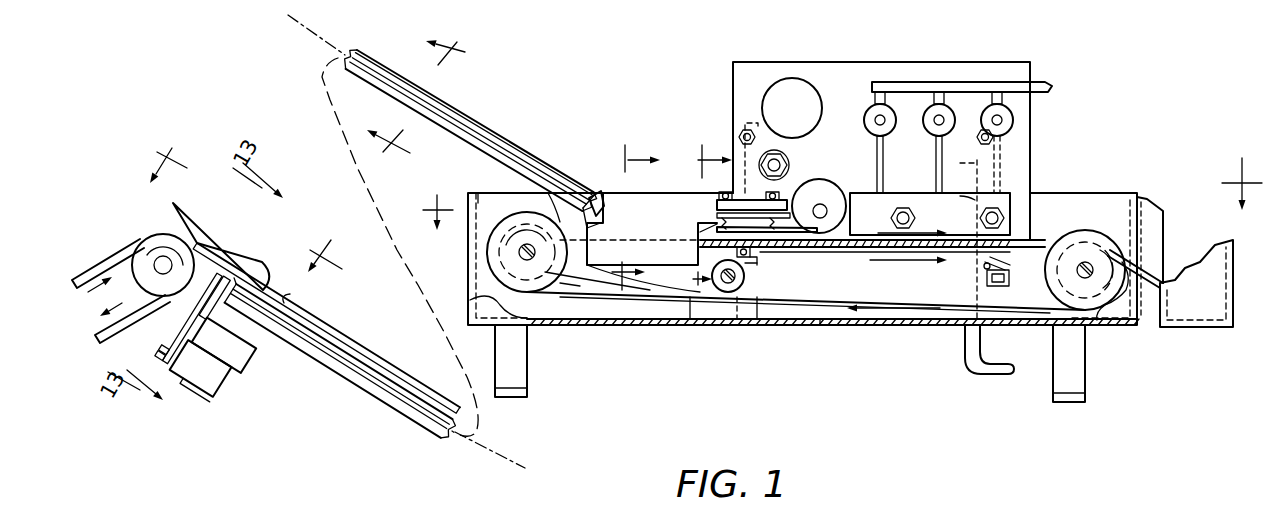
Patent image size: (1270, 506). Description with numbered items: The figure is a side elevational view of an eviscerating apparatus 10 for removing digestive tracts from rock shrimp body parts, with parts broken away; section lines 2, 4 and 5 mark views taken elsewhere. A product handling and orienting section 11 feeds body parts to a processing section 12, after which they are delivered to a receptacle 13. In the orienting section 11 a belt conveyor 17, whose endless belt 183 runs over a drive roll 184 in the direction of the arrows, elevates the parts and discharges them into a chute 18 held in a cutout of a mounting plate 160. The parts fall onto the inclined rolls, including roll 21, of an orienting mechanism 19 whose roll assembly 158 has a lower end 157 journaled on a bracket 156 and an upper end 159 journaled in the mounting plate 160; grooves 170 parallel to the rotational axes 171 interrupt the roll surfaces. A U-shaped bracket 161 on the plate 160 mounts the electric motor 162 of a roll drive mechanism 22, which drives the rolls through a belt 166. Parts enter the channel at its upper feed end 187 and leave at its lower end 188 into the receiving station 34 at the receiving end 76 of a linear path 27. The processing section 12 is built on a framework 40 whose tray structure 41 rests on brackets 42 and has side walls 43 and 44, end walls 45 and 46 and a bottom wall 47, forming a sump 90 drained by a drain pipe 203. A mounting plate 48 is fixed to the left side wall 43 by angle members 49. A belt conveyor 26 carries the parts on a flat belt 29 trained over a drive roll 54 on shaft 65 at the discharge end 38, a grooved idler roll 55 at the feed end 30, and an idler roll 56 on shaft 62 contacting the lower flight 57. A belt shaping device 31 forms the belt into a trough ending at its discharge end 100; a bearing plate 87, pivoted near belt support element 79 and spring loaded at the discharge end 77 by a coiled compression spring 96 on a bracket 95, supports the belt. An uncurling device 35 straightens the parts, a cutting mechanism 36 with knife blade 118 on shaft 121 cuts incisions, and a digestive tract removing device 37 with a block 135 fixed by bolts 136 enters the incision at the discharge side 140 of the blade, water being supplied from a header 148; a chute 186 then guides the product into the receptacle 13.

The eviscerating apparatus 10 is at (1075, 138).
The product handling and orienting section 11 is at (546, 75).
The processing section 12 is at (650, 95).
The receptacle 13 is at (1184, 329).
The belt conveyor 17 is at (100, 262).
The chute 18 is at (218, 208).
The orienting mechanism 19 is at (360, 352).
The roll 21 is at (476, 100).
The roll drive mechanism 22 is at (224, 392).
The belt conveyor 26 is at (836, 296).
The linear path 27 is at (980, 216).
The flat belt 29 is at (889, 283).
The feed end 30 is at (526, 218).
The belt shaping device 31 is at (579, 300).
The receiving station 34 is at (660, 214).
The uncurling device 35 is at (717, 222).
The cutting mechanism 36 is at (800, 180).
The digestive tract removing device 37 is at (888, 193).
The discharge end 38 is at (1092, 232).
The framework 40 is at (728, 326).
The tray forming structure 41 is at (792, 326).
The brackets 42 is at (528, 395).
The left side wall 43 is at (1080, 193).
The right side wall 44 is at (515, 310).
The end wall 45 is at (494, 190).
The end wall 46 is at (1150, 233).
The bottom wall 47 is at (684, 326).
The mounting plate 48 is at (1032, 128).
The angle members 49 is at (738, 135).
The drive roll 54 is at (1040, 272).
The grooved idler roll 55 is at (480, 250).
The idler roll 56 is at (745, 275).
The lower flight 57 is at (698, 296).
The transverse shaft 62 is at (781, 280).
The shaft 65 is at (1079, 260).
The receiving end 76 is at (566, 218).
The discharge end 77 is at (1053, 212).
The belt support element 79 is at (650, 293).
The bearing plate 87 is at (800, 255).
The sump 90 is at (833, 318).
The bracket 95 is at (1016, 280).
The coiled compression spring 96 is at (988, 264).
The discharge end of trough 100 is at (712, 233).
The knife blade 118 is at (877, 165).
The shaft 121 is at (823, 199).
The preformed block 135 is at (1012, 192).
The bolts 136 is at (975, 201).
The discharge side 140 is at (885, 220).
The header 148 is at (904, 82).
The bracket 156 is at (662, 184).
The lower end 157 is at (574, 150).
The roll assembly 158 is at (509, 139).
The upper end 159 is at (264, 300).
The mounting plate 160 is at (243, 257).
The U-shaped bracket 161 is at (246, 354).
The electric motor 162 is at (204, 396).
The belt 166 is at (192, 318).
The grooves 170 is at (303, 338).
The rotational axes 171 is at (312, 28).
The endless belt 183 is at (110, 253).
The drive roll 184 is at (140, 291).
The chute 186 is at (1150, 265).
The upper feed end 187 is at (284, 303).
The lower end 188 is at (562, 178).
The drain pipe 203 is at (963, 356).
The section line 2 is at (841, 194).
The section line 4 is at (632, 219).
The section line 5 is at (706, 217).